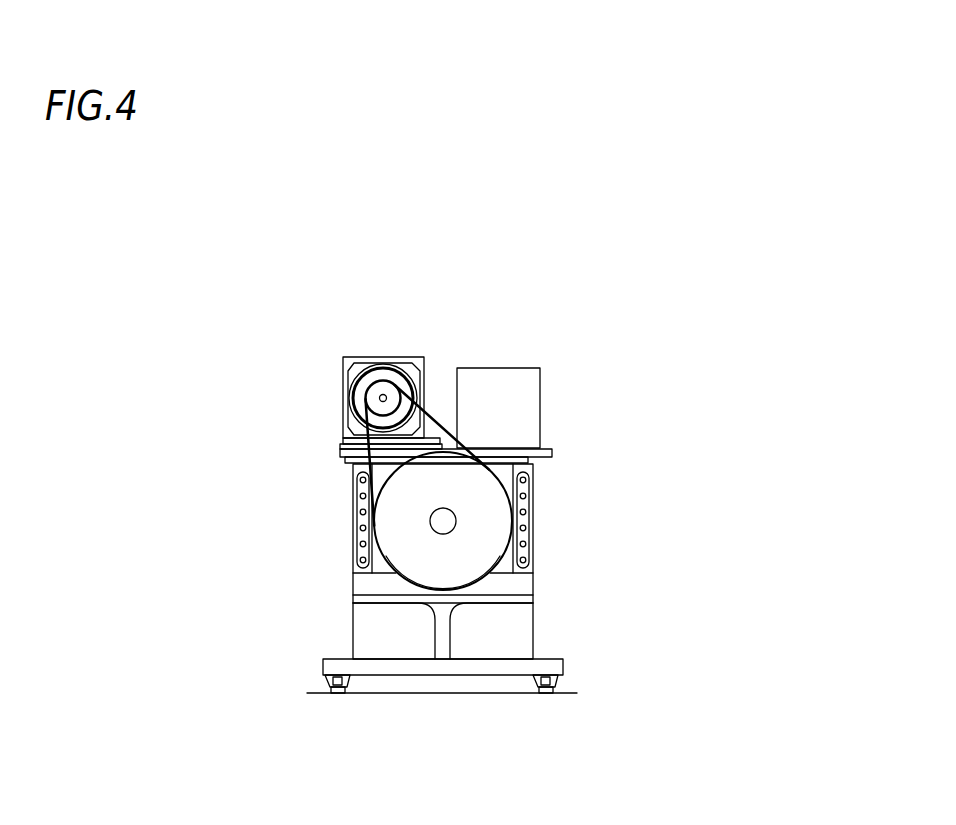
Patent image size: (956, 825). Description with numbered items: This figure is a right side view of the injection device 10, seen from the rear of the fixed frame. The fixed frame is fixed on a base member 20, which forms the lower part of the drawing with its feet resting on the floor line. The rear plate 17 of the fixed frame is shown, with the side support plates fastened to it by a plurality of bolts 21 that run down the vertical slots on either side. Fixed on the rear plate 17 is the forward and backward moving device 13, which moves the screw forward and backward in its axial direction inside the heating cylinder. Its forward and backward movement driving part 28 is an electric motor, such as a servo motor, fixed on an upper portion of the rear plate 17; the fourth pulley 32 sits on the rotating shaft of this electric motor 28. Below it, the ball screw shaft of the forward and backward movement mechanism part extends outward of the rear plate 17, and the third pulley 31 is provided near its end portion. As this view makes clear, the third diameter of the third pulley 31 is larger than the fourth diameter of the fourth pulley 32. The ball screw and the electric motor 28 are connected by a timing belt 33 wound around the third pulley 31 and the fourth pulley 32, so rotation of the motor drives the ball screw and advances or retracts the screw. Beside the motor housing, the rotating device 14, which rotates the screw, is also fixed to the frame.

The injection device 10 is at (599, 210).
The forward and backward moving device 13 is at (328, 317).
The rotating device 14 is at (527, 420).
The rear plate 17 is at (527, 465).
The base member 20 is at (520, 633).
The bolts 21 is at (523, 530).
The forward and backward movement driving part 28 is at (405, 368).
The third pulley 31 is at (412, 562).
The fourth pulley 32 is at (367, 393).
The timing belt 33 is at (440, 423).